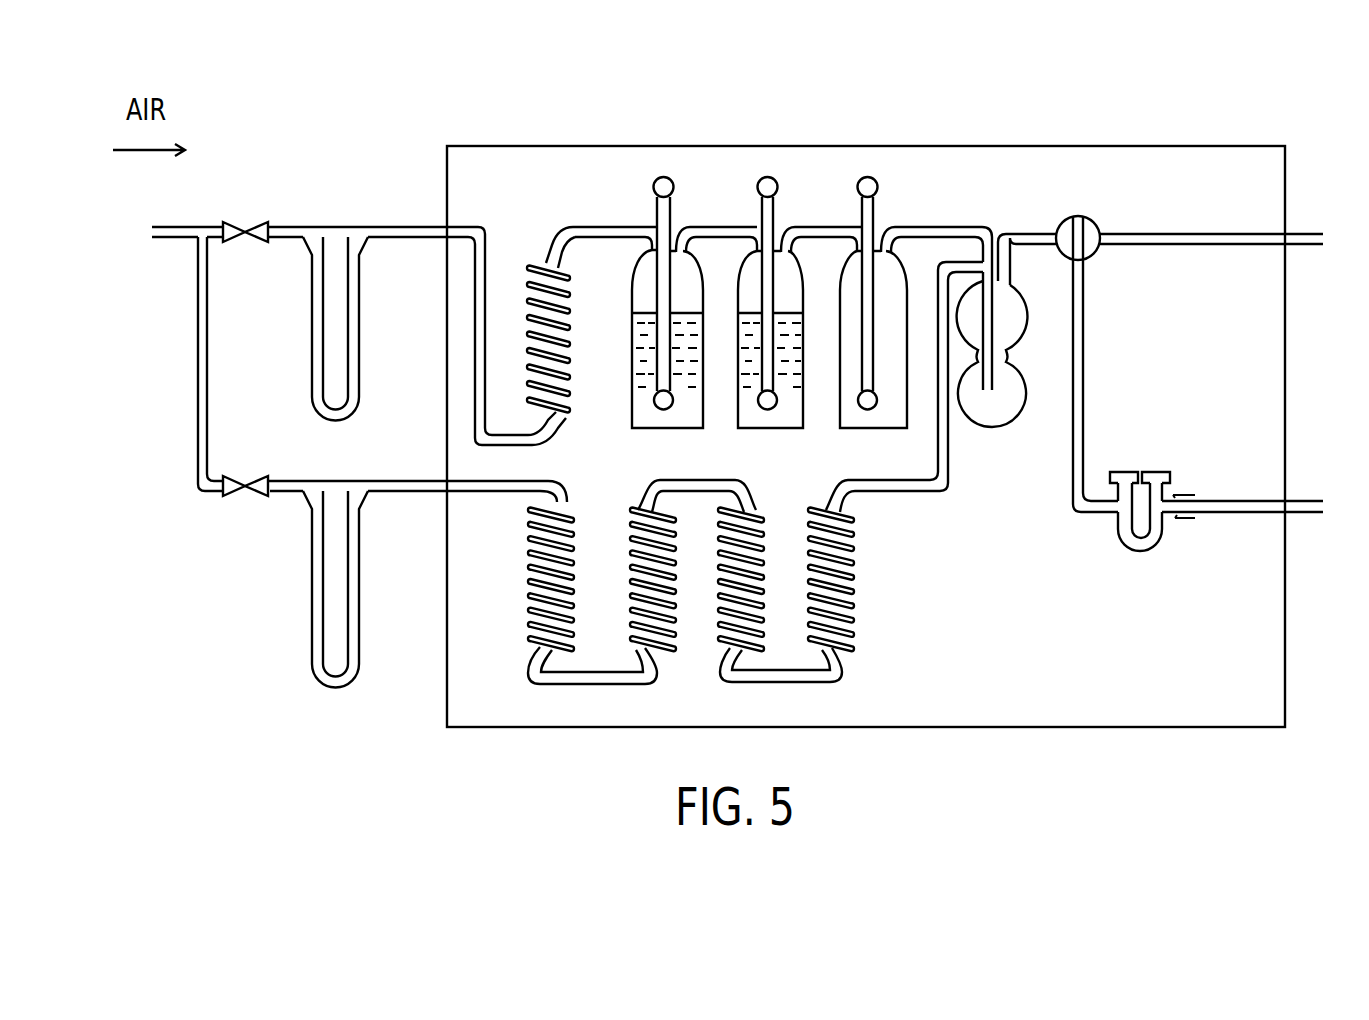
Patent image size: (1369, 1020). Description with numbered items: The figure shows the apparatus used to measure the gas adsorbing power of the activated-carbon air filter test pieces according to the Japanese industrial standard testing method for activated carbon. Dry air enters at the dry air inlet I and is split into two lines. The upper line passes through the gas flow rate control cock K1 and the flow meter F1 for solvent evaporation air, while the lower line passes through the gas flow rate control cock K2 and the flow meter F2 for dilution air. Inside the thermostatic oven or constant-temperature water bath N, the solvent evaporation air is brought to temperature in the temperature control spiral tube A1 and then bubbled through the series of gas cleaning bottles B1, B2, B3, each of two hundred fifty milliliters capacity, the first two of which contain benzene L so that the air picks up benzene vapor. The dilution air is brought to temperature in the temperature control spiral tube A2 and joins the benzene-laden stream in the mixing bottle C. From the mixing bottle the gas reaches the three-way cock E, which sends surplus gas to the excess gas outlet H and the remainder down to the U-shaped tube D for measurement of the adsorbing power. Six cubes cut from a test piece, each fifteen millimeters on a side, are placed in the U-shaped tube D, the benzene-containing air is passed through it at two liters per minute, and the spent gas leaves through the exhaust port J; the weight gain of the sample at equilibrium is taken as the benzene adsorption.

The dry air inlet I is at (174, 236).
The gas flow rate control cock K1 is at (245, 216).
The gas flow rate control cock K2 is at (245, 470).
The flow meter for solvent evaporation air F1 is at (349, 328).
The flow meter for dilution air F2 is at (353, 589).
The temperature control spiral tube A1 is at (548, 302).
The temperature control spiral tube A2 is at (691, 567).
The gas cleaning bottle B1 is at (694, 324).
The gas cleaning bottle B2 is at (800, 324).
The gas cleaning bottle B3 is at (916, 324).
The benzene L is at (750, 327).
The mixing bottle C is at (1006, 344).
The three-way cock E is at (1087, 344).
The excess gas outlet H is at (1224, 241).
The exhaust port J is at (1252, 509).
The U-shaped tube for measurement of the adsorbing power D is at (1140, 528).
The thermostatic oven or constant-temperature water bath N is at (866, 418).